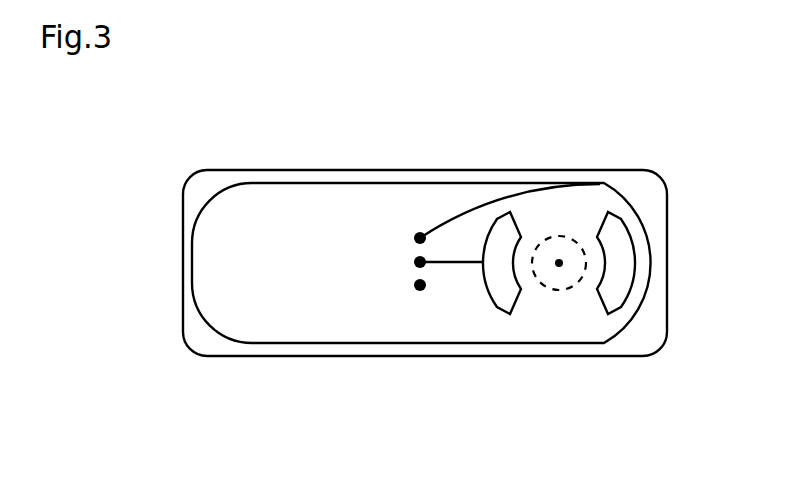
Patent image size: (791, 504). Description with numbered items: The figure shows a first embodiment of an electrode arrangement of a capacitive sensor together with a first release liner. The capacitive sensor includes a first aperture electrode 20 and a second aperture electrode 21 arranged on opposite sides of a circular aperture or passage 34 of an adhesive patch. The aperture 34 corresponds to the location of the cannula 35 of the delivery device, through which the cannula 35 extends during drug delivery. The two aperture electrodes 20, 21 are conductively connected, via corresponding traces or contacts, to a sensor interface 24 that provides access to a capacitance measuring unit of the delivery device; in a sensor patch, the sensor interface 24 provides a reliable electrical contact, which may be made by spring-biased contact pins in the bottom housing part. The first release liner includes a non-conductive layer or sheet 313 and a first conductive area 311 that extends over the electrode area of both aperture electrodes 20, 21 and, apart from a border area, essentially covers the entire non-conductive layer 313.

The non-conductive layer 313 is at (425, 215).
The first conductive area 311 is at (421, 209).
The sensor interface 24 is at (481, 315).
The first aperture electrode 20 is at (485, 194).
The second aperture electrode 21 is at (628, 194).
The aperture 34 is at (572, 341).
The cannula 35 is at (559, 263).